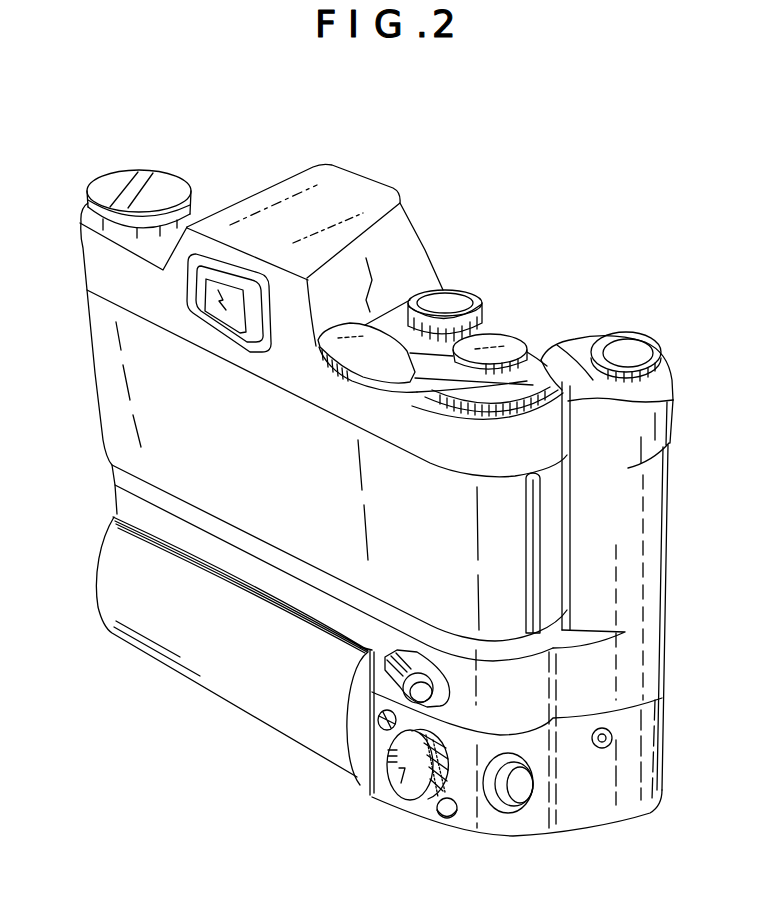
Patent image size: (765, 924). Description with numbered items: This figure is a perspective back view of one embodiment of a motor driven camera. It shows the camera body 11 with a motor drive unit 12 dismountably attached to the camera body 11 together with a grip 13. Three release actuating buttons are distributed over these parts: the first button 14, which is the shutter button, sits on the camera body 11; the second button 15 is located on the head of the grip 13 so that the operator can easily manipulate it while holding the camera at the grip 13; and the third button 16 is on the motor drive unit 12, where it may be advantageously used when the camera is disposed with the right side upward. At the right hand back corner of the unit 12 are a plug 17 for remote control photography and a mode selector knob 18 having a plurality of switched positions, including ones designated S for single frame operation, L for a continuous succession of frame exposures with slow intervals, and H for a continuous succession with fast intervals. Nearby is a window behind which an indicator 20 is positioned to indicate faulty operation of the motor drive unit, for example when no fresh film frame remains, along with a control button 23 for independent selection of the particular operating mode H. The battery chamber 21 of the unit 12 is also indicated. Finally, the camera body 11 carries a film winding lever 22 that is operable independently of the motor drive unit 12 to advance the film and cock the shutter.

The camera body 11 is at (113, 377).
The motor drive unit 12 is at (573, 808).
The grip 13 is at (640, 513).
The first release actuating button 14 is at (456, 300).
The second release actuating button 15 is at (628, 347).
The third release actuating button 16 is at (517, 797).
The plug 17 is at (603, 752).
The mode selector knob 18 is at (402, 790).
The indicator 20 is at (378, 720).
The battery chamber 21 is at (243, 688).
The film winding lever 22 is at (367, 356).
The control button 23 is at (445, 818).